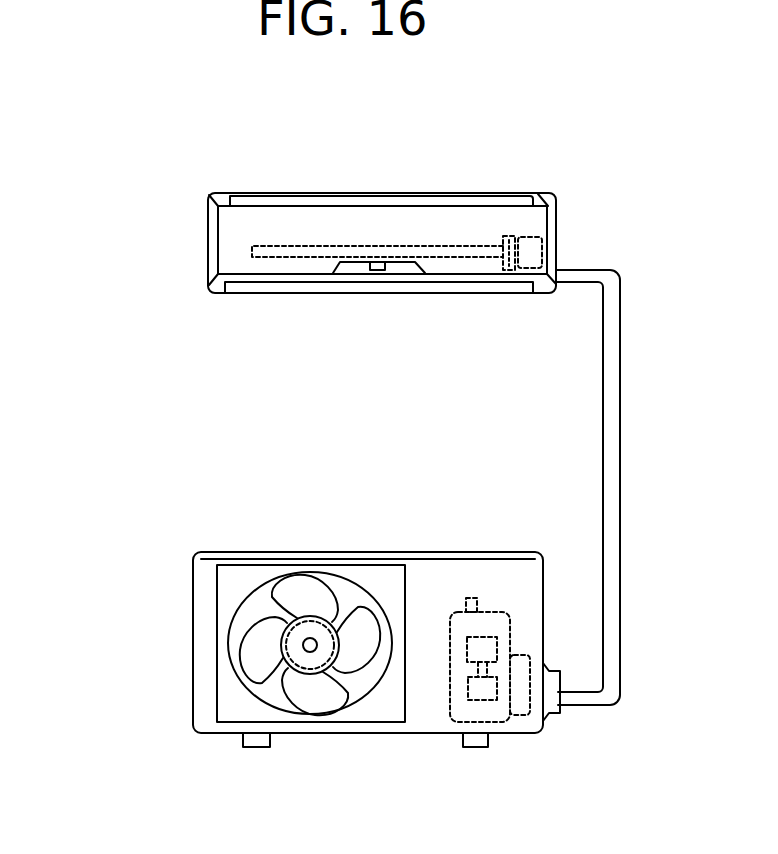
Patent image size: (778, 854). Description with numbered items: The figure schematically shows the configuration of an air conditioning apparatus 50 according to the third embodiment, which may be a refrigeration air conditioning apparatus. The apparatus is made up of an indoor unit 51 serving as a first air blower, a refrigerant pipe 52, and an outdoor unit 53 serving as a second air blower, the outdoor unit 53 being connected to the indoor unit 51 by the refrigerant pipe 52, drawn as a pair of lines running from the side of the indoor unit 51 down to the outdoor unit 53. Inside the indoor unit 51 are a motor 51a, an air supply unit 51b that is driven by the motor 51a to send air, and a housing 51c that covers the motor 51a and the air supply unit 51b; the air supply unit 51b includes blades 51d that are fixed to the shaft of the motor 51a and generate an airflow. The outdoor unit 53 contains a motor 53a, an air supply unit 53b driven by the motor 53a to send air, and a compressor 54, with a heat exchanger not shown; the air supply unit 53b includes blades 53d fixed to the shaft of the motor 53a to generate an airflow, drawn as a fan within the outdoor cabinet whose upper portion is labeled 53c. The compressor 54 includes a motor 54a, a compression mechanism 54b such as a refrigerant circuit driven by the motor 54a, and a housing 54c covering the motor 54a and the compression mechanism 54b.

The air conditioning apparatus 50 is at (88, 185).
The indoor unit 51 is at (262, 176).
The motor 51a is at (542, 252).
The air supply unit 51b is at (252, 250).
The housing 51c is at (375, 193).
The blades 51d is at (512, 272).
The refrigerant pipe 52 is at (621, 428).
The outdoor unit 53 is at (262, 511).
The motor 53a is at (312, 662).
The air supply unit 53b is at (217, 608).
The outdoor unit housing top 53c is at (368, 552).
The blades 53d is at (245, 652).
The compressor 54 is at (442, 620).
The motor 54a is at (487, 640).
The compression mechanism 54b is at (482, 700).
The housing 54c is at (455, 721).